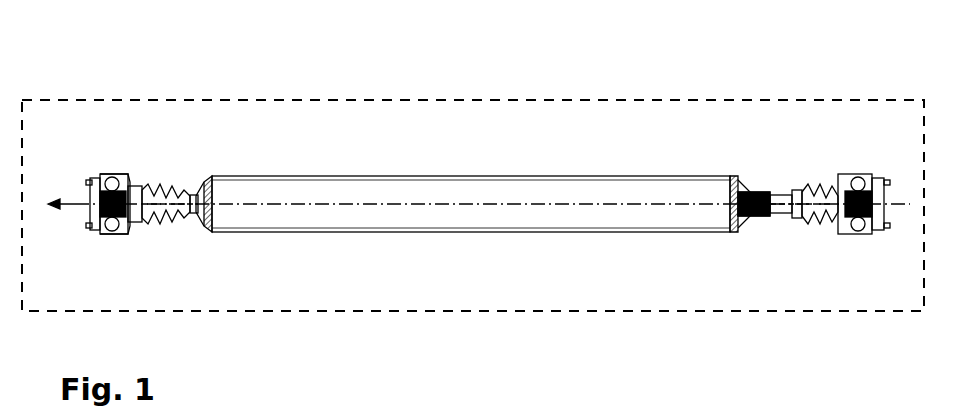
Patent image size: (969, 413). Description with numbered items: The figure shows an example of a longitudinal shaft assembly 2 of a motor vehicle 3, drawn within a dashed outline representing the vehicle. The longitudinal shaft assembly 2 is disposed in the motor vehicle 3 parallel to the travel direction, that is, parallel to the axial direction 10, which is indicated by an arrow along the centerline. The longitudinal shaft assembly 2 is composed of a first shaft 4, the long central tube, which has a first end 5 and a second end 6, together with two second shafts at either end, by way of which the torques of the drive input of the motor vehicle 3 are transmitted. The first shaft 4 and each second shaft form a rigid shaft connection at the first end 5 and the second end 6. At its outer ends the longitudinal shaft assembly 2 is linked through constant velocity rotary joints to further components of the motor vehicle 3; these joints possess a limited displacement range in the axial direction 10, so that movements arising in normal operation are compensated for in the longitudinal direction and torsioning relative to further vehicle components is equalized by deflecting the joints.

The longitudinal shaft assembly 2 is at (483, 155).
The motor vehicle 3 is at (316, 100).
The first shaft 4 is at (408, 232).
The first end 5 is at (740, 180).
The second end 6 is at (208, 176).
The axial direction 10 is at (479, 219).